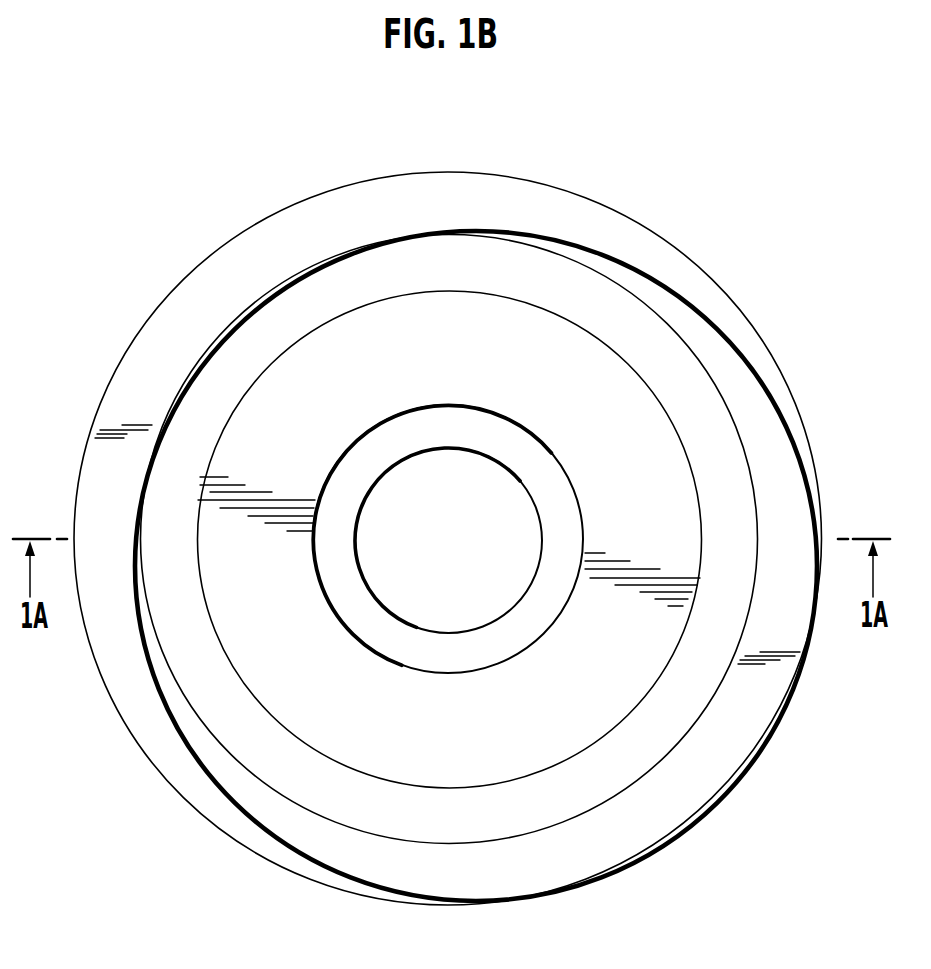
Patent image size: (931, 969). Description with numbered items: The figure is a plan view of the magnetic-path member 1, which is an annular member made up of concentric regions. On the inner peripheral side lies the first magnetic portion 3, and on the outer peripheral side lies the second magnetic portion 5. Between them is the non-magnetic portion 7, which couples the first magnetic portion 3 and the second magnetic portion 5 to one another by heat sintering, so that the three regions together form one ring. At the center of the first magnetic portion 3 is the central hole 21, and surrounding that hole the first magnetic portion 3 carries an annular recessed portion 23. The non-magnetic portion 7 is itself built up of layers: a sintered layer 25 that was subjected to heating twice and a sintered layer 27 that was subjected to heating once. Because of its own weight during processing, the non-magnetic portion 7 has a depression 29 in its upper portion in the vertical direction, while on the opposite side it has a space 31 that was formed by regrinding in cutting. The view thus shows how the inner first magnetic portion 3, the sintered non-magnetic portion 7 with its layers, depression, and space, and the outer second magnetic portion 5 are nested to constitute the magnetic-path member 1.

The magnetic-path member 1 is at (448, 523).
The first magnetic portion 3 is at (449, 489).
The second magnetic portion 5 is at (456, 522).
The non-magnetic portion 7 is at (533, 603).
The central hole 21 is at (402, 462).
The annular recessed portion 23 is at (517, 425).
The sintered layer 25 is at (450, 539).
The sintered layer 27 is at (450, 539).
The depression 29 is at (623, 763).
The space 31 is at (450, 539).